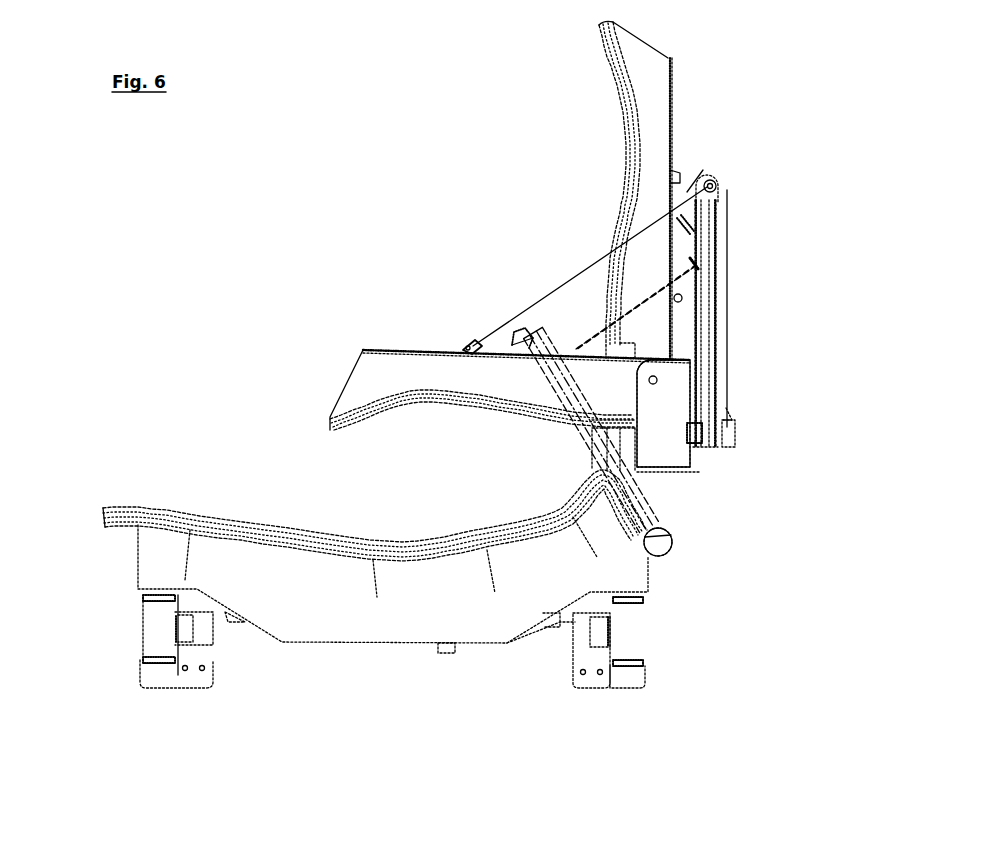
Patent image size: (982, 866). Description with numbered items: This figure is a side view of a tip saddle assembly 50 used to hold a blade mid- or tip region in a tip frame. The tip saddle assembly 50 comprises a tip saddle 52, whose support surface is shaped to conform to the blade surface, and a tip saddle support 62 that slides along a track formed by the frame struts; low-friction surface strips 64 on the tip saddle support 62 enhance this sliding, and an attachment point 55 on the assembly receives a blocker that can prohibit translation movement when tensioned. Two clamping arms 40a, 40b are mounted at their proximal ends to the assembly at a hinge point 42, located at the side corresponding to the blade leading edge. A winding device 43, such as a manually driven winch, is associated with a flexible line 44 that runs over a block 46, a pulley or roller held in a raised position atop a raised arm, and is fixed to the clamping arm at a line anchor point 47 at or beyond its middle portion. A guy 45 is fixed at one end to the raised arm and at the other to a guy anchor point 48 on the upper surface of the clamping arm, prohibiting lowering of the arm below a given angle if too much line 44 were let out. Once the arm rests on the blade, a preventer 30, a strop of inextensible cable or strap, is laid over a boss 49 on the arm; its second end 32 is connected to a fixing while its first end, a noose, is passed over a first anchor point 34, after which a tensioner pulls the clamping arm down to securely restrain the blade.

The preventer 30 is at (601, 472).
The second end of the preventer 32 is at (636, 498).
The first anchor point 34 is at (653, 542).
The first clamping arm 40a is at (358, 378).
The second clamping arm 40b is at (642, 66).
The hinge point 42 is at (657, 380).
The winding device 43 is at (728, 437).
The flexible line 44 is at (688, 190).
The guy 45 is at (634, 305).
The block 46 is at (717, 190).
The line anchor point 47 is at (518, 336).
The guy anchor point 48 is at (682, 298).
The boss 49 is at (470, 346).
The tip saddle assembly 50 is at (95, 268).
The tip saddle 52 is at (197, 522).
The attachment point 55 is at (443, 652).
The tip saddle support 62 is at (592, 630).
The low-friction surface strips 64 is at (152, 662).